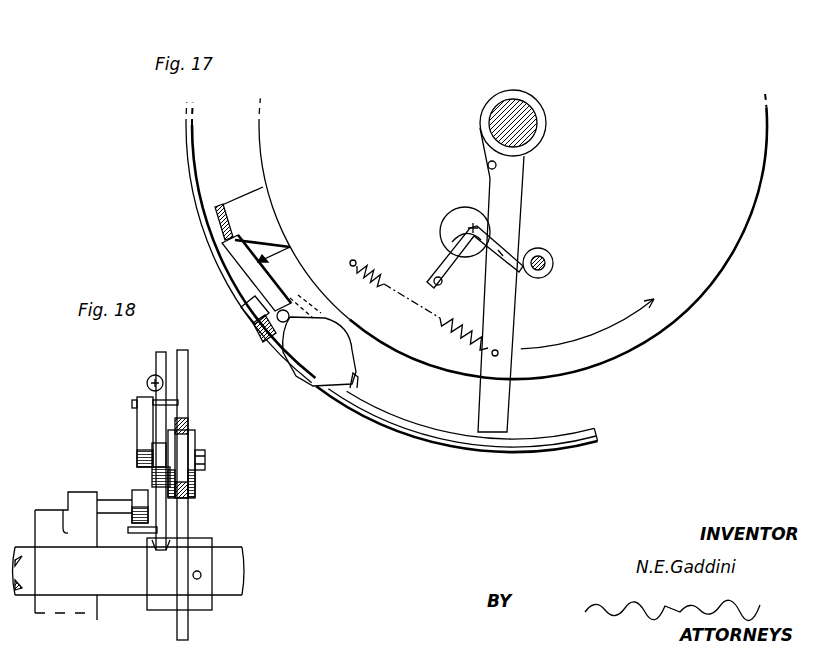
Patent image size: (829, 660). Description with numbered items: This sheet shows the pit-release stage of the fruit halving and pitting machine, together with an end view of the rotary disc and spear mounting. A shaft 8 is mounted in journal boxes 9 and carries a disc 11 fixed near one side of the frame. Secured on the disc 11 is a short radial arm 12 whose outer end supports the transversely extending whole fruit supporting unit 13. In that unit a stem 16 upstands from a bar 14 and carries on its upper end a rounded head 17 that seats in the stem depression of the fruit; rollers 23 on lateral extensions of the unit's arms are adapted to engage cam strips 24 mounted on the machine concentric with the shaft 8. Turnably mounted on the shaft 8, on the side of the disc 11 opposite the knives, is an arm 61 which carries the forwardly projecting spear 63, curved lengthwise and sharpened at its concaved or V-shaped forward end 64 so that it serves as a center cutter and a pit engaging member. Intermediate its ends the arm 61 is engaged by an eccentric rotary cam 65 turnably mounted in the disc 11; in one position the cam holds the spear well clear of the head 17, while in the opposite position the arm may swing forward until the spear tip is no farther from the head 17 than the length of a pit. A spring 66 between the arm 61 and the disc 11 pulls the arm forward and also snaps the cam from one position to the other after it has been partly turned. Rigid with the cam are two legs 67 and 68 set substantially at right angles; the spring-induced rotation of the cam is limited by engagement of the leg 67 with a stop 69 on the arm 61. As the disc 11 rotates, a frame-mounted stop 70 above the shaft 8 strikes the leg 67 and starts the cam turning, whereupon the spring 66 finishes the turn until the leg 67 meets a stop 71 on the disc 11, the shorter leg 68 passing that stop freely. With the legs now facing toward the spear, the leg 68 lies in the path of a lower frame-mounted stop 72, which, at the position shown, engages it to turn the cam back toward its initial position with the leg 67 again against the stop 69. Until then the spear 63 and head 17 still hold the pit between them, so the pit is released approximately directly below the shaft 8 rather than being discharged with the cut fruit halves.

In FIG. 17, the shaft 8 is at (517, 123).
In FIG. 18, the shaft 8 is at (228, 558).
In FIG. 18, the journal boxes 9 is at (45, 515).
In FIG. 17, the disc 11 is at (683, 288).
In FIG. 18, the disc 11 is at (190, 387).
In FIG. 17, the radial arm 12 is at (262, 211).
In FIG. 17, the whole fruit supporting unit 13 is at (292, 247).
In FIG. 17, the bar 14 is at (219, 205).
In FIG. 17, the stem 16 is at (266, 291).
In FIG. 17, the rounded head 17 is at (289, 312).
In FIG. 17, the rollers 23 is at (246, 320).
In FIG. 17, the cam strips 24 is at (194, 197).
In FIG. 17, the arm 61 is at (517, 204).
In FIG. 18, the arm 61 is at (166, 412).
In FIG. 17, the spear 63 is at (420, 419).
In FIG. 17, the concaved or V-shaped forward end 64 is at (359, 381).
In FIG. 17, the eccentric rotary cam 65 is at (449, 226).
In FIG. 18, the eccentric rotary cam 65 is at (158, 455).
In FIG. 17, the spring 66 is at (451, 324).
In FIG. 18, the spring 66 is at (150, 378).
In FIG. 17, the leg 67 is at (440, 264).
In FIG. 18, the leg 67 is at (137, 420).
In FIG. 17, the leg 68 is at (493, 254).
In FIG. 17, the stop 69 is at (488, 165).
In FIG. 18, the stop 69 is at (140, 534).
In FIG. 18, the frame-mounted stop 70 is at (137, 495).
In FIG. 17, the stop 71 is at (443, 281).
In FIG. 18, the stop 71 is at (131, 403).
In FIG. 17, the frame-mounted stop 72 is at (553, 258).